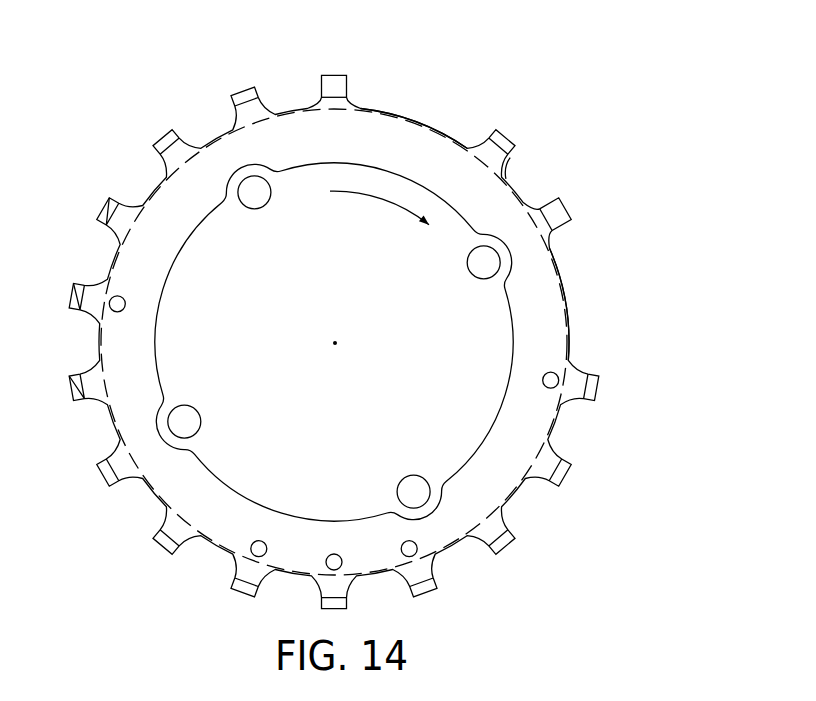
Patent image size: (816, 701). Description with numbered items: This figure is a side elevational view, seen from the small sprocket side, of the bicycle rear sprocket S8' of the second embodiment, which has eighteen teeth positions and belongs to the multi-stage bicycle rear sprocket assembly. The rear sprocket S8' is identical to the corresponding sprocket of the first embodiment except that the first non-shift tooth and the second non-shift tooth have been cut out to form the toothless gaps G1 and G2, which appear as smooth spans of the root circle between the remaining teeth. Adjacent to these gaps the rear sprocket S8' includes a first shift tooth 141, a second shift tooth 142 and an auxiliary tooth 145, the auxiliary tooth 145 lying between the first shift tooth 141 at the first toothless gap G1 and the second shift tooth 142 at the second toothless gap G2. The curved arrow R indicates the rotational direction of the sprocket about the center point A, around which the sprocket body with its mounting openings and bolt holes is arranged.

The first shift tooth 141 is at (342, 65).
The second shift tooth 142 is at (576, 203).
The auxiliary tooth 145 is at (508, 130).
The toothless gap G1 is at (431, 102).
The toothless gap G2 is at (594, 300).
The rear sprocket S8' is at (381, 333).
The rotational direction R is at (370, 198).
The rotational center axis A is at (337, 347).